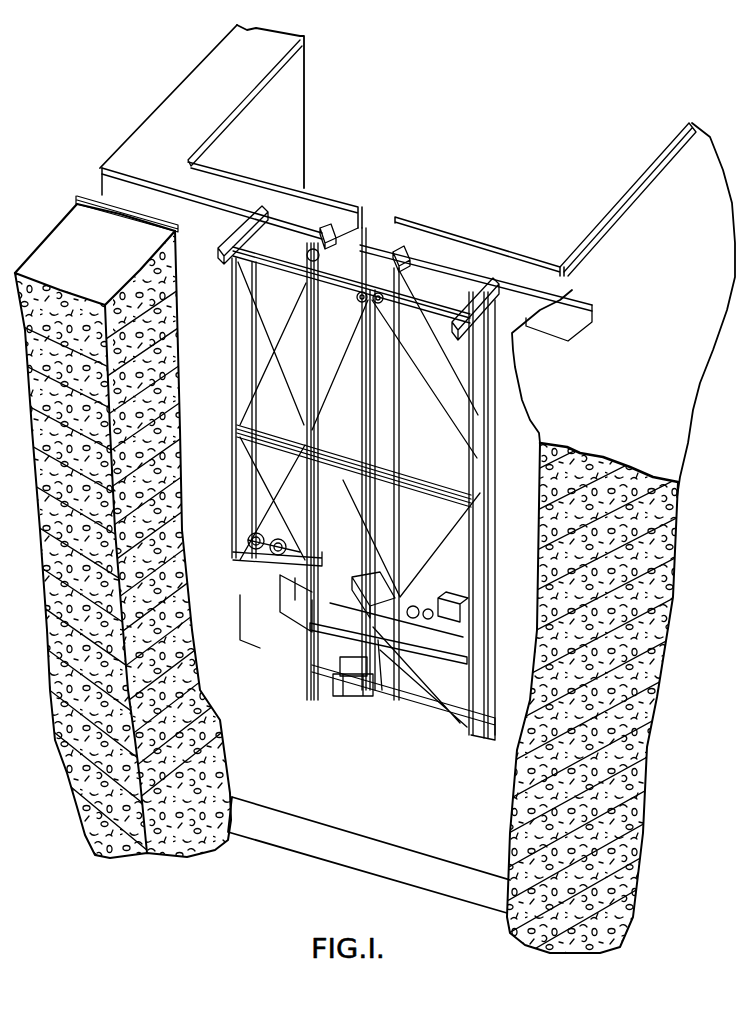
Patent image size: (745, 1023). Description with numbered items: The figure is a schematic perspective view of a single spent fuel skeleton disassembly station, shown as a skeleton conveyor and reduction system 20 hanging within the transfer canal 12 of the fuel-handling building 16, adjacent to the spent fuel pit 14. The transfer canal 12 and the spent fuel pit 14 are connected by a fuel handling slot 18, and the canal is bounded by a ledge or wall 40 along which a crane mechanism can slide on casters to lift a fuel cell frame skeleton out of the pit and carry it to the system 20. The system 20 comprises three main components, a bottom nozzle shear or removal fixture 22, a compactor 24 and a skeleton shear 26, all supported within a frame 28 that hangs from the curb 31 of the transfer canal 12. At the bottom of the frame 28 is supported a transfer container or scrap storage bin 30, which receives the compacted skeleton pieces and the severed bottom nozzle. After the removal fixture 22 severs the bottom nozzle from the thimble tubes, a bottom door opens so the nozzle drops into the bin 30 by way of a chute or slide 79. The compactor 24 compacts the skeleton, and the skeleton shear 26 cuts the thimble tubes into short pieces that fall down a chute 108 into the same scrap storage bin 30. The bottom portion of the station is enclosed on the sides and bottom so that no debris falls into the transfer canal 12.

The transfer canal 12 is at (97, 188).
The spent fuel pit 14 is at (582, 181).
The fuel-handling building 16 is at (190, 65).
The fuel handling slot 18 is at (378, 220).
The skeleton conveyor and reduction system 20 is at (490, 412).
The nozzle shear or removal fixture 22 is at (270, 566).
The compactor 24 is at (463, 613).
The skeleton shear 26 is at (405, 616).
The frame 28 is at (492, 523).
The scrap storage bin 30 is at (357, 690).
The curb 31 is at (574, 288).
The wall 40 is at (240, 96).
The chute or slide 79 is at (302, 632).
The chute 108 is at (382, 650).